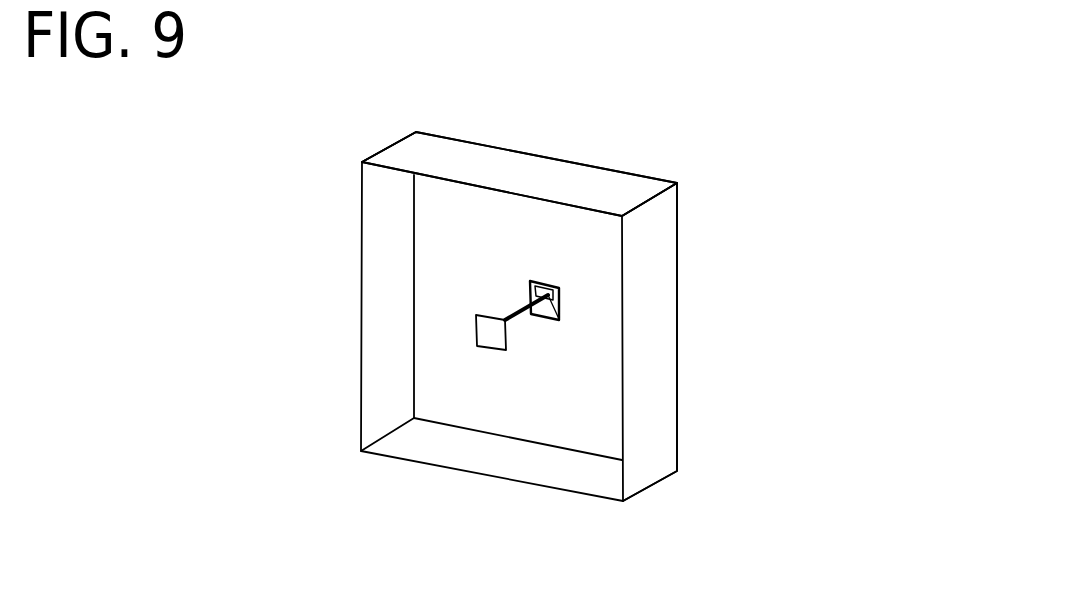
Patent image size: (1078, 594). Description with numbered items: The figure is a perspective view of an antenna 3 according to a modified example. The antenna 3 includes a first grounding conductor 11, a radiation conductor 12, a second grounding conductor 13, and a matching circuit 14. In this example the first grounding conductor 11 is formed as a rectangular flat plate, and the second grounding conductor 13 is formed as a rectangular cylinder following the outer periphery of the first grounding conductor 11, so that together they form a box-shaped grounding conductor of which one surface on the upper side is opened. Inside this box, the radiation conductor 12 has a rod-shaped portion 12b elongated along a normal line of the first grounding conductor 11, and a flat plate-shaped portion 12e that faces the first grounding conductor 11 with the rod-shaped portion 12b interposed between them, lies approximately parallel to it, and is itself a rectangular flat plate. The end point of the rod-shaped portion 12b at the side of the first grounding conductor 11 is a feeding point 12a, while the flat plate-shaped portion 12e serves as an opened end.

The antenna 3 is at (673, 507).
The first grounding conductor 11 is at (503, 226).
The radiation conductor 12 is at (537, 361).
The feeding point 12a is at (565, 330).
The rod-shaped portion 12b is at (507, 322).
The flat plate-shaped portion 12e is at (490, 350).
The second grounding conductor 13 is at (662, 295).
The matching circuit 14 is at (562, 293).